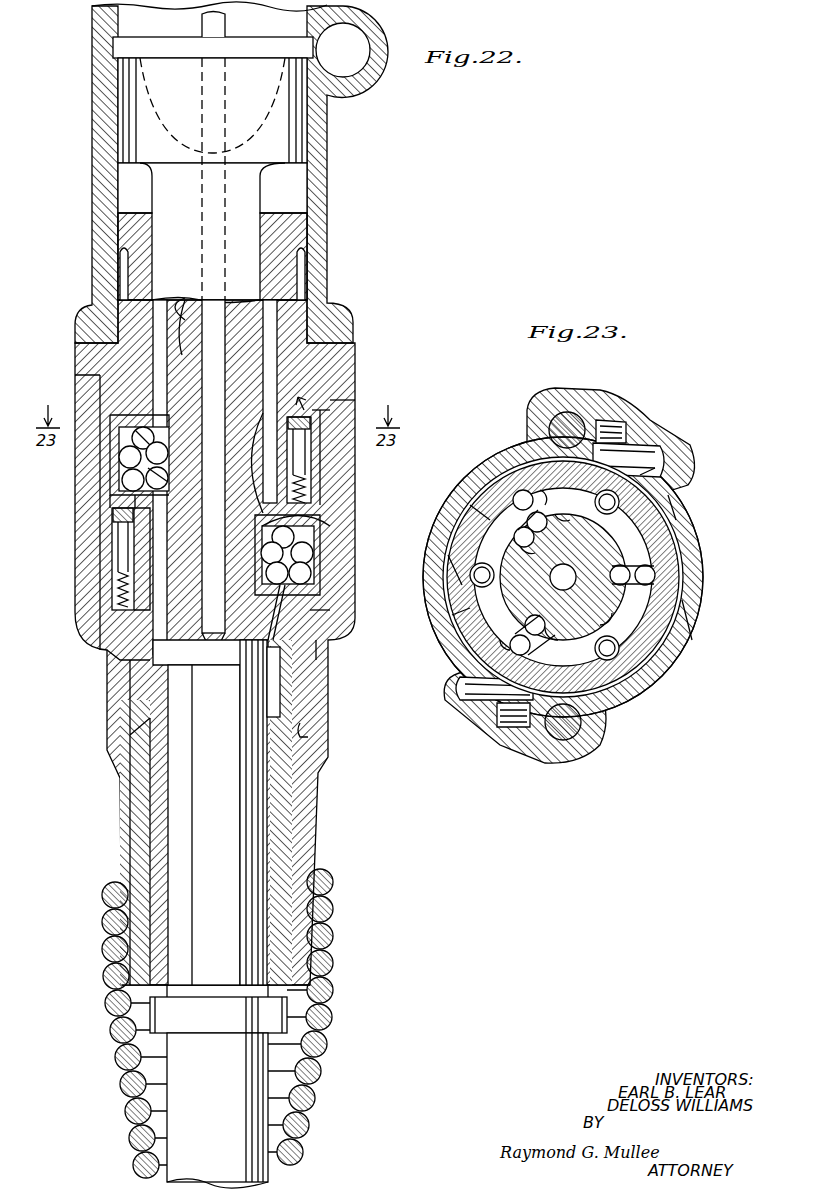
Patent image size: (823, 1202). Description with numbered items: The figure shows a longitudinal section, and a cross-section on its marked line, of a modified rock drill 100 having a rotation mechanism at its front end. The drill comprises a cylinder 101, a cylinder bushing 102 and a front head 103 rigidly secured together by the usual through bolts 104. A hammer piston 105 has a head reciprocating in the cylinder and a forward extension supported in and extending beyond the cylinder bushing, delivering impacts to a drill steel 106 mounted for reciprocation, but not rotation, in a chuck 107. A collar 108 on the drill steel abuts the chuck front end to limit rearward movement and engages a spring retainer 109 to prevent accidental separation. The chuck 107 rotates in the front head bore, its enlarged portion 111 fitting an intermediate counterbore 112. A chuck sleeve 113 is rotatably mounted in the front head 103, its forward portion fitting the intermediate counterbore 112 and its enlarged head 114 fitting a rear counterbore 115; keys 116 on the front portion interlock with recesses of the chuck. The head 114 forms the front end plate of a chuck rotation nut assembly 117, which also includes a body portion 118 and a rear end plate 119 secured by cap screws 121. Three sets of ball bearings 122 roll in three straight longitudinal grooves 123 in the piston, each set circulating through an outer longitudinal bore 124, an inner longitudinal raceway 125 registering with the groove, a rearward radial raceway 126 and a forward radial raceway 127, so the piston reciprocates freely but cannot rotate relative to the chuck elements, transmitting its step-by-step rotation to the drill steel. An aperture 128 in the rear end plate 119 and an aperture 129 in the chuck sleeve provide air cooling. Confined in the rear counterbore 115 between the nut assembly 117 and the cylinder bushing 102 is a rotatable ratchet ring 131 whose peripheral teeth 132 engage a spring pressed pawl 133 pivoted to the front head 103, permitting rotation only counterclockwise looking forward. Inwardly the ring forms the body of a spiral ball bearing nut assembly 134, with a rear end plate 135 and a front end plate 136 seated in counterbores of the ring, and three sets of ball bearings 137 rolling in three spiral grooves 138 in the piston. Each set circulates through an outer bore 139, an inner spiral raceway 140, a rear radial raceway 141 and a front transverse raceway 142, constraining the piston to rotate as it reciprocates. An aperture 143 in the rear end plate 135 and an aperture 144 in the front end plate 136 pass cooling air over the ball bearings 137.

In FIG. 22, the modified rock drill 100 is at (348, 212).
In FIG. 22, the cylinder 101 is at (100, 173).
In FIG. 22, the cylinder bushing 102 is at (80, 355).
In FIG. 22, the front head 103 is at (88, 528).
In FIG. 23, the front head 103 is at (672, 512).
In FIG. 23, the through bolts 104 is at (585, 734).
In FIG. 22, the hammer piston 105 is at (130, 103).
In FIG. 22, the drill steel 106 is at (265, 830).
In FIG. 22, the chuck 107 is at (148, 797).
In FIG. 22, the collar 108 is at (290, 1010).
In FIG. 22, the spring retainer 109 is at (310, 1066).
In FIG. 22, the enlarged portion 111 is at (118, 707).
In FIG. 22, the intermediate counterbore 112 is at (312, 726).
In FIG. 22, the chuck sleeve 113 is at (320, 630).
In FIG. 22, the head 114 is at (312, 583).
In FIG. 22, the rear counterbore 115 is at (112, 590).
In FIG. 22, the keys 116 is at (282, 684).
In FIG. 22, the chuck rotation nut assembly 117 is at (104, 575).
In FIG. 22, the body portion 118 is at (125, 632).
In FIG. 22, the rear end plate 119 is at (300, 540).
In FIG. 22, the cap screws 121 is at (120, 600).
In FIG. 22, the ball bearings 122 is at (312, 563).
In FIG. 22, the straight longitudinal grooves 123 is at (232, 664).
In FIG. 23, the straight longitudinal grooves 123 is at (600, 618).
In FIG. 22, the outer longitudinal bore 124 is at (312, 553).
In FIG. 22, the inner longitudinal raceway 125 is at (248, 560).
In FIG. 22, the rearward radial raceway 126 is at (325, 515).
In FIG. 22, the forward radial raceway 127 is at (290, 590).
In FIG. 22, the aperture 128 is at (248, 440).
In FIG. 22, the aperture 129 is at (330, 645).
In FIG. 22, the ratchet ring 131 is at (325, 445).
In FIG. 23, the ratchet ring 131 is at (495, 478).
In FIG. 22, the teeth 132 is at (320, 425).
In FIG. 23, the teeth 132 is at (680, 630).
In FIG. 23, the spring pressed pawl 133 is at (625, 445).
In FIG. 22, the spiral ball bearing nut assembly 134 is at (340, 375).
In FIG. 22, the rear end plate 135 is at (325, 465).
In FIG. 22, the front end plate 136 is at (110, 498).
In FIG. 22, the ball bearings 137 is at (168, 455).
In FIG. 23, the ball bearings 137 is at (648, 566).
In FIG. 22, the spiral grooves 138 is at (185, 298).
In FIG. 23, the spiral grooves 138 is at (520, 537).
In FIG. 22, the outer bore 139 is at (118, 470).
In FIG. 22, the inner spiral raceway 140 is at (166, 462).
In FIG. 22, the rear radial raceway 141 is at (126, 432).
In FIG. 23, the rear radial raceway 141 is at (538, 640).
In FIG. 22, the front transverse raceway 142 is at (140, 488).
In FIG. 22, the aperture 143 is at (150, 425).
In FIG. 22, the aperture 144 is at (160, 505).